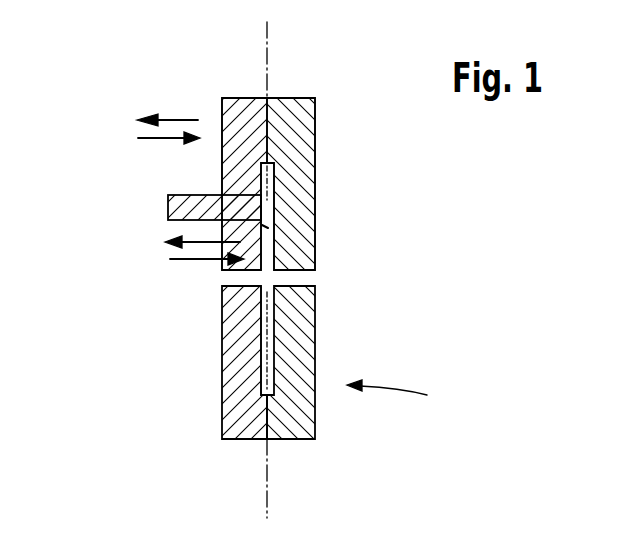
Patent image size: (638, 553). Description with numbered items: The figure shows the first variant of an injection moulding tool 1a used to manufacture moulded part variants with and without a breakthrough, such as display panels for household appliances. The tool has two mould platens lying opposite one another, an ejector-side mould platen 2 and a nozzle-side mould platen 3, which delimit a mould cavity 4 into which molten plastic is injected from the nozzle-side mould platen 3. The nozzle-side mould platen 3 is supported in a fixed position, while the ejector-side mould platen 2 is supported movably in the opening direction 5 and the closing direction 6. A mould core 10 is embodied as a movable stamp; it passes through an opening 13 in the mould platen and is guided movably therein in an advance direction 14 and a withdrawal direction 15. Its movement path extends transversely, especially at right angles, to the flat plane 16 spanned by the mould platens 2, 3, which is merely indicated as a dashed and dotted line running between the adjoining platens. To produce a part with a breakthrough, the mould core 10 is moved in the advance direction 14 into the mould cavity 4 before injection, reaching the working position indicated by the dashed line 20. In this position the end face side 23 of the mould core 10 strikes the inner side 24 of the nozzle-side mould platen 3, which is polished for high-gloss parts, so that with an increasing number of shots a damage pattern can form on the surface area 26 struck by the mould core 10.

The injection moulding tool 1a is at (462, 406).
The ejector-side mould platen 2 is at (238, 428).
The nozzle-side mould platen 3 is at (304, 426).
The mould cavity 4 is at (272, 313).
The opening direction 5 is at (178, 119).
The closing direction 6 is at (170, 139).
The mould core 10 is at (168, 203).
The opening 13 is at (232, 195).
The advance direction 14 is at (198, 262).
The withdrawal direction 15 is at (198, 241).
The flat plane 16 is at (267, 488).
The dashed line 20 is at (273, 227).
The end face side 23 is at (273, 200).
The inner side 24 is at (271, 345).
The surface area 26 is at (271, 207).